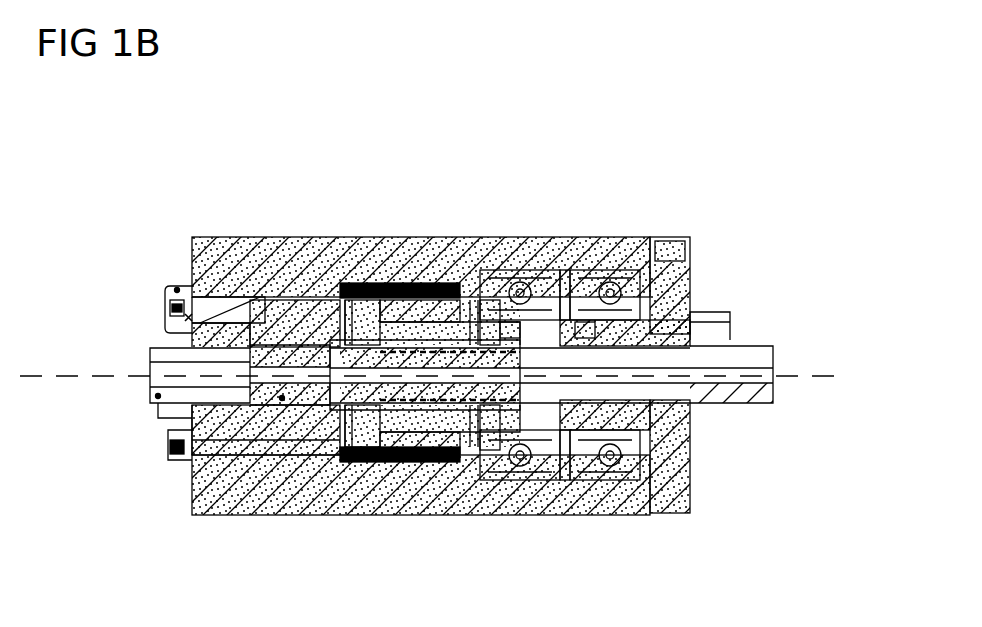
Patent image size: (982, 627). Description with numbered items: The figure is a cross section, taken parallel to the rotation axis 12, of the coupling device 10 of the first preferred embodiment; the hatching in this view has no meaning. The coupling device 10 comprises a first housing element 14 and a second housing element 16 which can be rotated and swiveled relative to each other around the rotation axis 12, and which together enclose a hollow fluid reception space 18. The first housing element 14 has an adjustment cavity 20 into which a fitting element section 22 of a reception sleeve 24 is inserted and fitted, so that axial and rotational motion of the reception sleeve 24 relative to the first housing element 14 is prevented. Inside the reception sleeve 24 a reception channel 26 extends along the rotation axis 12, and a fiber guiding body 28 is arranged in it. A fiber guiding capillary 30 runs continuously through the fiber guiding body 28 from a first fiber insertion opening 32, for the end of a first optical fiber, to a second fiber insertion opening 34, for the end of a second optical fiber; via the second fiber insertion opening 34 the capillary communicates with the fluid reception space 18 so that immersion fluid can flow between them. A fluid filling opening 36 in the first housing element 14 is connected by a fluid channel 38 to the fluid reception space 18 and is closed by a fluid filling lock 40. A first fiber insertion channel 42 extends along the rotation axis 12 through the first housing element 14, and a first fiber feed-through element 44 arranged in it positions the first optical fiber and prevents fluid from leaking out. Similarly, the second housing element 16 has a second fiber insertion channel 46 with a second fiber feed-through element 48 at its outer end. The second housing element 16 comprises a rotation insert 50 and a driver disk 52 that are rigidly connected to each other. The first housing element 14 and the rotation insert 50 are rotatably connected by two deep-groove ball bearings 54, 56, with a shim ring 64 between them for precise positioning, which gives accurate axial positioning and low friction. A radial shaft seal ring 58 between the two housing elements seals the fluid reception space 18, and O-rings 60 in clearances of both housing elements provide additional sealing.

The coupling device 10 is at (716, 100).
The rotation axis 12 is at (855, 364).
The first housing element 14 is at (238, 240).
The second housing element 16 is at (682, 410).
The fluid reception space 18 is at (350, 447).
The adjustment cavity 20 is at (300, 420).
The fitting element section 22 is at (282, 398).
The reception sleeve 24 is at (375, 410).
The reception channel 26 is at (492, 450).
The fiber guiding body 28 is at (345, 300).
The fiber guiding capillary 30 is at (355, 300).
The first fiber insertion opening 32 is at (265, 292).
The second fiber insertion opening 34 is at (410, 300).
The fluid filling opening 36 is at (188, 318).
The fluid channel 38 is at (188, 300).
The fluid filling lock 40 is at (177, 290).
The first fiber insertion channel 42 is at (152, 358).
The first fiber feed-through element 44 is at (158, 398).
The second fiber insertion channel 46 is at (690, 340).
The second fiber feed-through element 48 is at (773, 394).
The rotation insert 50 is at (688, 340).
The driver disk 52 is at (650, 513).
The deep-groove ball bearing 54 is at (500, 270).
The deep-groove ball bearing 56 is at (575, 270).
The radial shaft seal ring 58 is at (400, 455).
The O-rings 60 is at (485, 275).
The shim ring 64 is at (542, 270).